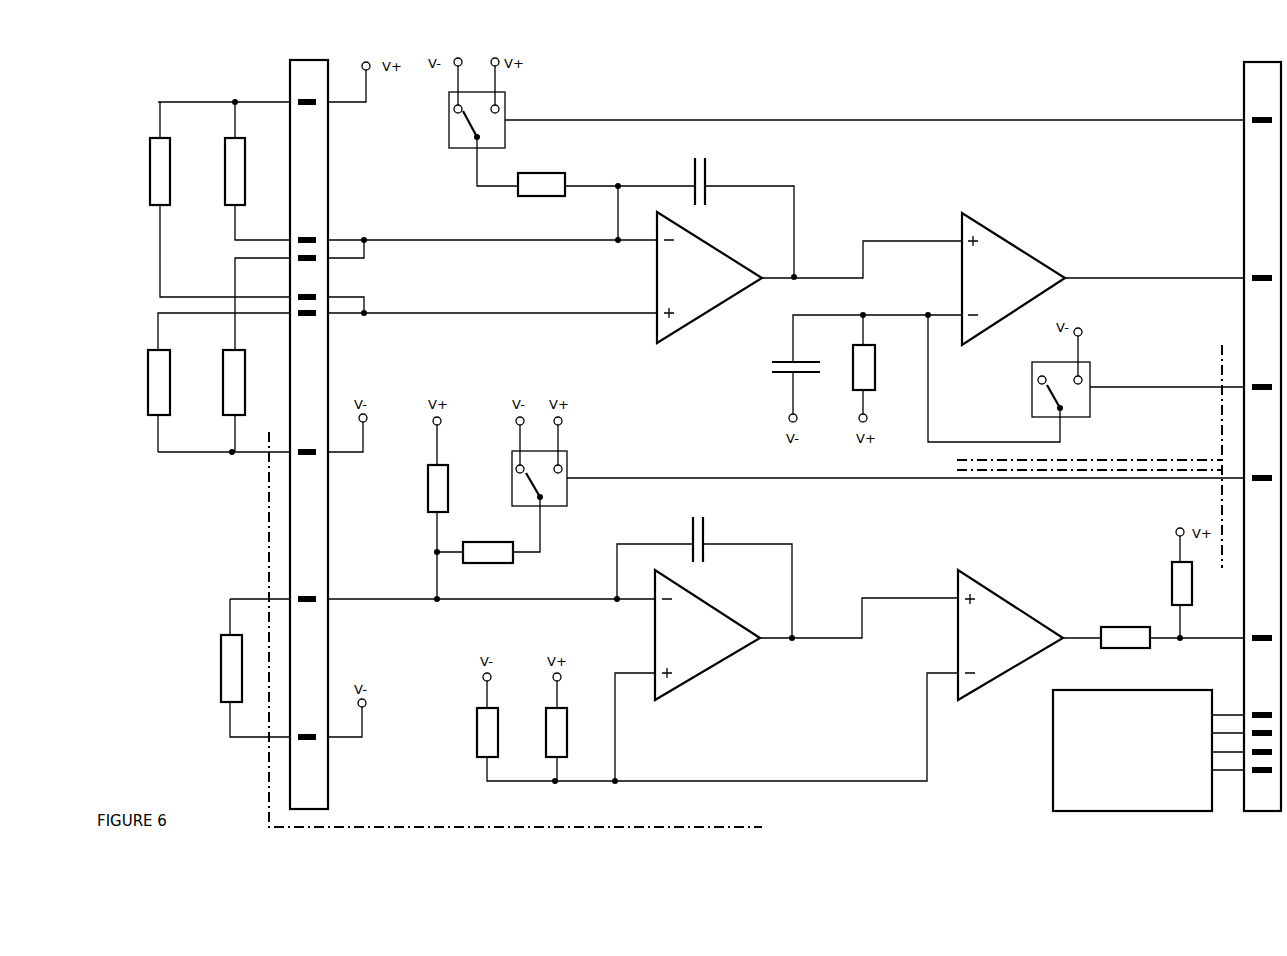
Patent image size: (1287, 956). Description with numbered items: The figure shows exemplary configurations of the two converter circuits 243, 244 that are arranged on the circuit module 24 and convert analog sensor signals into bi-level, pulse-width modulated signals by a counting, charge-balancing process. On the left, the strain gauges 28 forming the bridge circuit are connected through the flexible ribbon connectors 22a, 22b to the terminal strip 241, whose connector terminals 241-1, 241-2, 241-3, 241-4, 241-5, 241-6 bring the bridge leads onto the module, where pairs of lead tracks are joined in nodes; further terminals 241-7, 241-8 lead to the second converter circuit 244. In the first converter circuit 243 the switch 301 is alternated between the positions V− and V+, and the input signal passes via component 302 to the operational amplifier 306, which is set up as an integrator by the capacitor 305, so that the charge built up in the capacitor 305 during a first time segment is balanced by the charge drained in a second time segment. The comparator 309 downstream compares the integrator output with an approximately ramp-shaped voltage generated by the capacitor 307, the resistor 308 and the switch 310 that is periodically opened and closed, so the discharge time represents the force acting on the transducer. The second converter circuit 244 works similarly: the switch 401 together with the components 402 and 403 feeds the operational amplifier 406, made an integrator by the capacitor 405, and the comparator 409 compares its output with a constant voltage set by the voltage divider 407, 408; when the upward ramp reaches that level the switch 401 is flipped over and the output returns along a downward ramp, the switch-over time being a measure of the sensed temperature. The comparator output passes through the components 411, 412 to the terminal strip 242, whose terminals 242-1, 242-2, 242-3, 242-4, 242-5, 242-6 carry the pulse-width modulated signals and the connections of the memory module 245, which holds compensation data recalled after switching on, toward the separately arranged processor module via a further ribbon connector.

The flexible ribbon connector 22a is at (223, 94).
The flexible ribbon connector 22b is at (223, 465).
The circuit module 24 is at (270, 791).
The strain gauge 28 is at (216, 420).
The terminal strip 241 is at (301, 81).
The connector terminal 241-1 is at (309, 109).
The connector terminal 241-2 is at (309, 233).
The connector terminal 241-3 is at (309, 264).
The connector terminal 241-4 is at (309, 289).
The connector terminal 241-5 is at (309, 320).
The connector terminal 241-6 is at (309, 445).
The connector pin 7 241-7 is at (309, 592).
The connector pin 8 241-8 is at (309, 730).
The terminal strip 242 is at (1259, 89).
The output connector pin 1 242-1 is at (1263, 128).
The output connector pin 2 242-2 is at (1263, 286).
The output connector pin 3 242-3 is at (1263, 395).
The output connector pin 4 242-4 is at (1263, 470).
The output connector pin 5 242-5 is at (1263, 630).
The output connector pins 6 242-6 is at (1263, 735).
The first converter circuit 243 is at (1089, 456).
The second converter circuit 244 is at (1089, 488).
The memory module 245 is at (1148, 750).
The switch 301 is at (453, 103).
The input resistor 302 is at (541, 172).
The capacitor 305 is at (709, 173).
The operational amplifier 306 is at (706, 259).
The capacitor 307 is at (785, 355).
The resistor 308 is at (848, 364).
The comparator 309 is at (1012, 262).
The switch 310 is at (1041, 372).
The switch 401 is at (557, 461).
The bias resistor 402 is at (417, 512).
The input resistor 403 is at (488, 542).
The capacitor 405 is at (705, 535).
The operational amplifier 406 is at (703, 621).
The voltage divider resistor 407 is at (473, 719).
The voltage divider resistor 408 is at (542, 731).
The comparator 409 is at (1013, 621).
The output resistor 411 is at (1125, 650).
The pull-up resistor 412 is at (1166, 587).